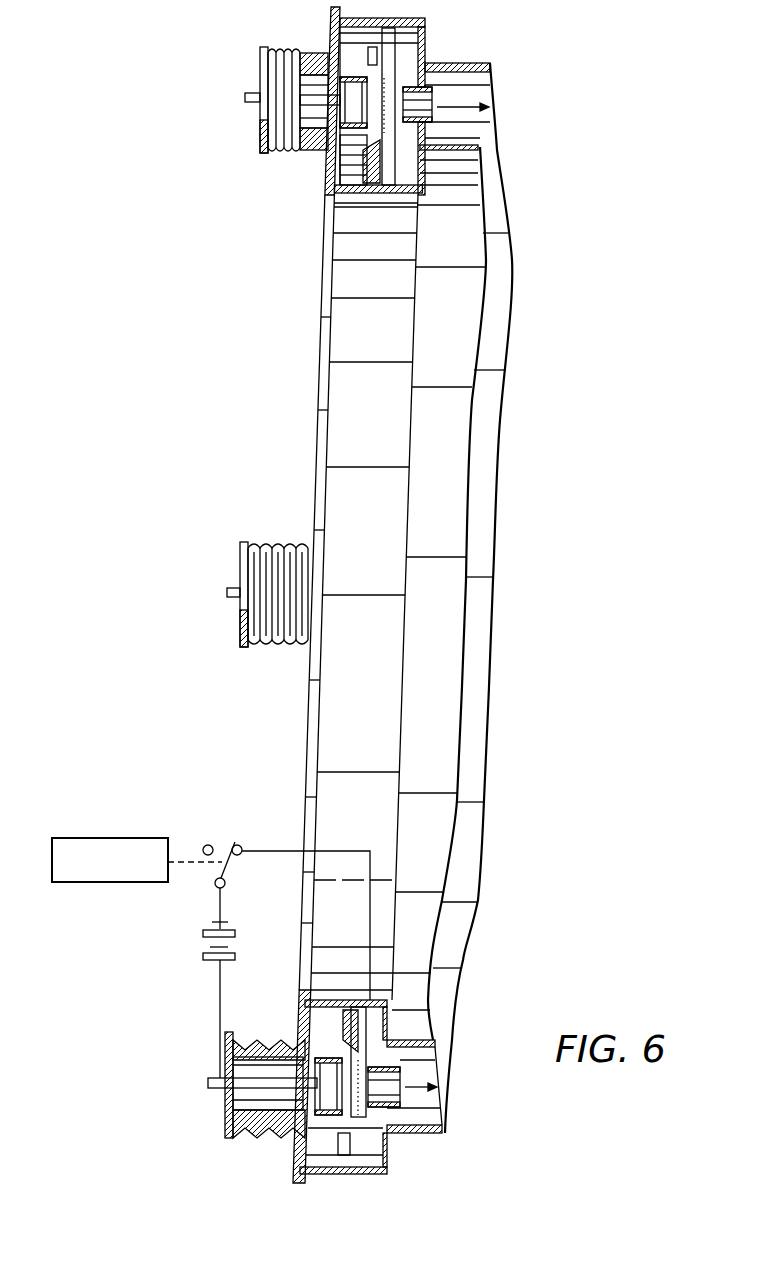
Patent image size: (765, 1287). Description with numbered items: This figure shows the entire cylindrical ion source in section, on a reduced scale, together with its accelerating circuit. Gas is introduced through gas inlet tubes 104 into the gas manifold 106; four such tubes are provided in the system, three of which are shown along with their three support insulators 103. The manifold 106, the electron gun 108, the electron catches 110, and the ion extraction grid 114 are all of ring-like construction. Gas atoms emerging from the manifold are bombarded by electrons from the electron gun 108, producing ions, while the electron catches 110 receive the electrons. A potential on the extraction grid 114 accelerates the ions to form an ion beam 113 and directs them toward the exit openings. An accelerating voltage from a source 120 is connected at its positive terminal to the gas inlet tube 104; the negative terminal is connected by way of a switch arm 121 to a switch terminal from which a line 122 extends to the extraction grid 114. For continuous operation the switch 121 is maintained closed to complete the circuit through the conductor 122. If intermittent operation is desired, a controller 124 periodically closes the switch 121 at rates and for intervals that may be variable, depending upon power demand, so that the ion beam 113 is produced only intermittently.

The support insulator 103 is at (297, 150).
The gas inlet tube 104 is at (250, 103).
The gas manifold 106 is at (352, 76).
The electron gun 108 is at (378, 56).
The electron catch 110 is at (362, 170).
The ion beam 113 is at (465, 100).
The extraction grid 114 is at (395, 76).
The accelerating voltage source 120 is at (201, 942).
The switch arm 121 is at (227, 870).
The line 122 is at (274, 850).
The controller 124 is at (76, 838).